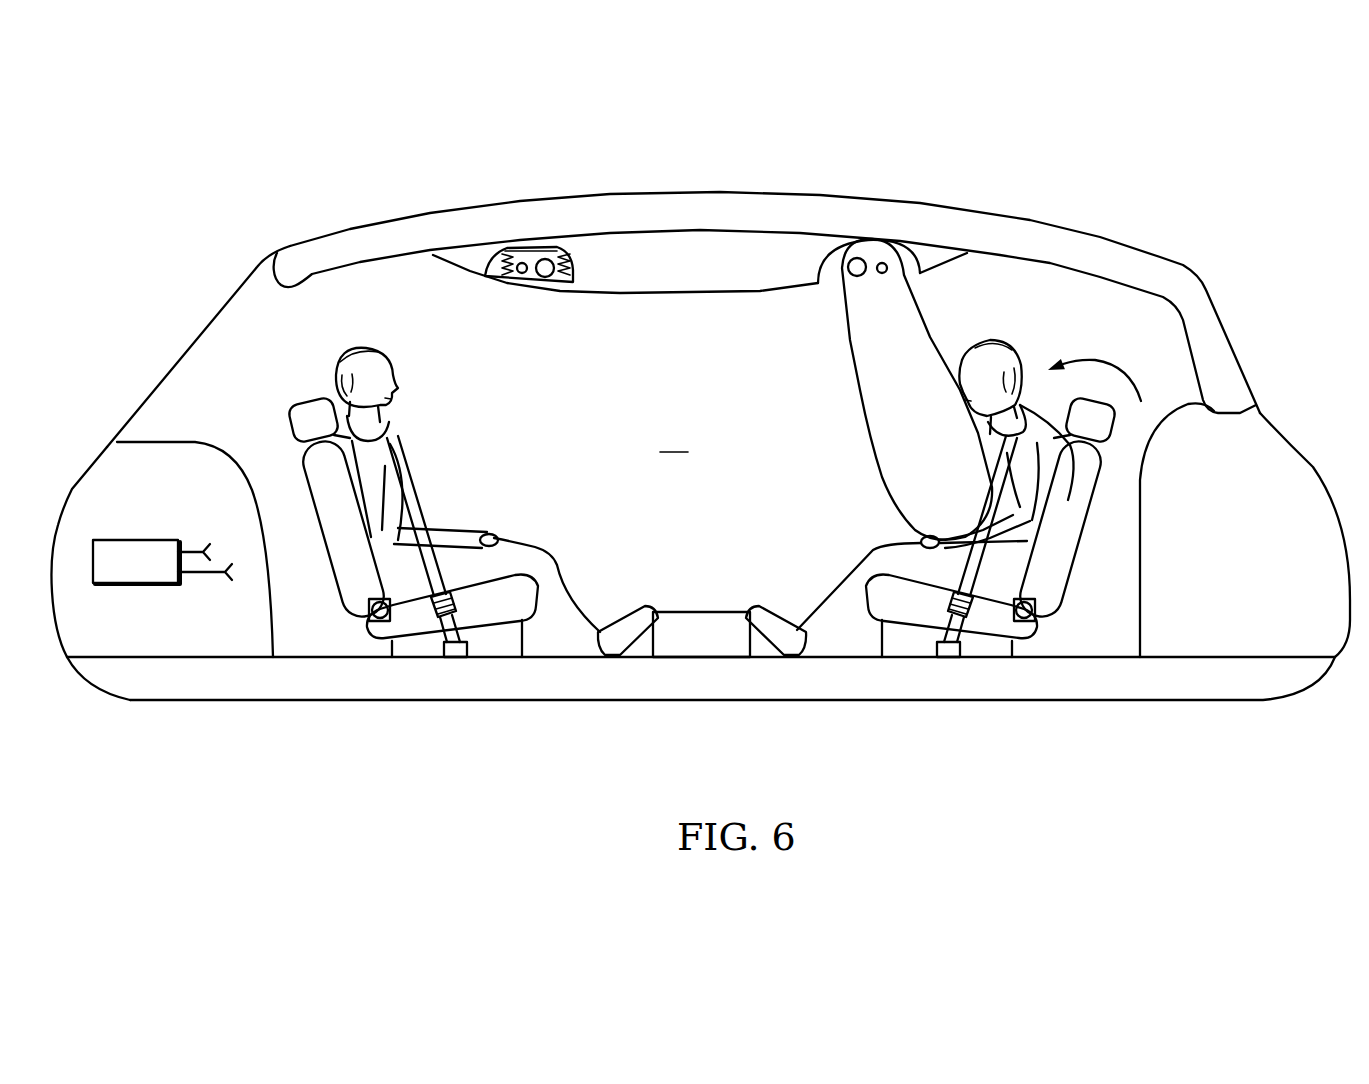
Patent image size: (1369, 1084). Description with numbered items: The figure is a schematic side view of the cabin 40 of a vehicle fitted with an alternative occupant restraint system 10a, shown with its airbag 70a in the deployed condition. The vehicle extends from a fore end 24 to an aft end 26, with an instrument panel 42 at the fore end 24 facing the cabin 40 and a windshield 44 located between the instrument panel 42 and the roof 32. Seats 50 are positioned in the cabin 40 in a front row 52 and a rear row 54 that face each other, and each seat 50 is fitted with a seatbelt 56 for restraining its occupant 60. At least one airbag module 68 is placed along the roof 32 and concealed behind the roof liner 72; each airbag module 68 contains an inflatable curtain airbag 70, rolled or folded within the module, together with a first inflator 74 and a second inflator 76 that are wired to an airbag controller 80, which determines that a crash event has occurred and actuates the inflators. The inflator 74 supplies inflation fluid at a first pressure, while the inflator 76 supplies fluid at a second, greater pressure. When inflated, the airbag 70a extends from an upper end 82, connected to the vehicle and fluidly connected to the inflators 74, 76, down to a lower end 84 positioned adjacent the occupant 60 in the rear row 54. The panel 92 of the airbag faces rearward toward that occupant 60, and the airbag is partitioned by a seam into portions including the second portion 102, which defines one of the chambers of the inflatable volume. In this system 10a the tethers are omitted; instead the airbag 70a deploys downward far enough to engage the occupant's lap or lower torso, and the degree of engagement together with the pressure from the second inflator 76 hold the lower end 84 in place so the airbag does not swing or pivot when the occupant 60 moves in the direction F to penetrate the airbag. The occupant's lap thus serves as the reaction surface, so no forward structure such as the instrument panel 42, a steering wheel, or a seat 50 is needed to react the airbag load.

The occupant restraint system 10a is at (922, 226).
The fore end 24 is at (120, 368).
The aft end 26 is at (1299, 375).
The roof 32 is at (1028, 240).
The cabin 40 is at (674, 440).
The instrument panel 42 is at (215, 450).
The windshield 44 is at (191, 345).
The seat 50 is at (358, 595).
The front row 52 is at (438, 720).
The rear row 54 is at (947, 720).
The seatbelt 56 is at (420, 517).
The occupant 60 is at (387, 460).
The airbag module 68 is at (487, 253).
The airbag 70 is at (573, 260).
The airbag 70a is at (857, 381).
The roof liner 72 is at (683, 292).
The inflator 74 is at (520, 277).
The inflator 76 is at (545, 277).
The airbag controller 80 is at (138, 549).
The upper end 82 is at (832, 245).
The lower end 84 is at (864, 527).
The panel 92 is at (918, 300).
The second portion 102 is at (868, 310).
The direction F is at (1133, 382).